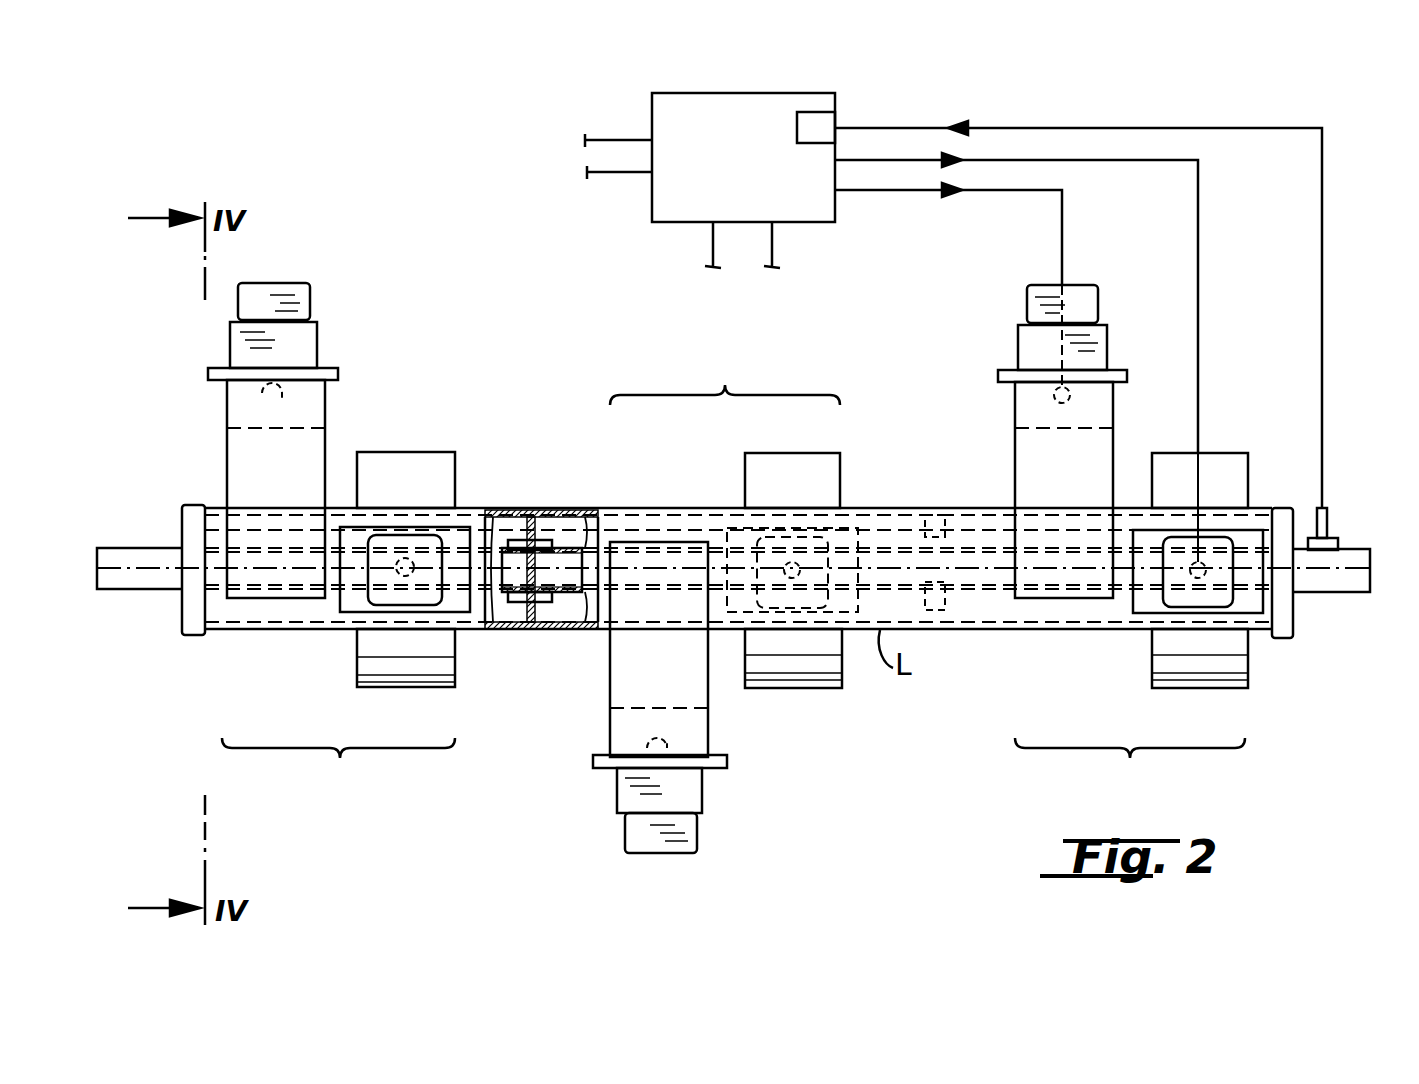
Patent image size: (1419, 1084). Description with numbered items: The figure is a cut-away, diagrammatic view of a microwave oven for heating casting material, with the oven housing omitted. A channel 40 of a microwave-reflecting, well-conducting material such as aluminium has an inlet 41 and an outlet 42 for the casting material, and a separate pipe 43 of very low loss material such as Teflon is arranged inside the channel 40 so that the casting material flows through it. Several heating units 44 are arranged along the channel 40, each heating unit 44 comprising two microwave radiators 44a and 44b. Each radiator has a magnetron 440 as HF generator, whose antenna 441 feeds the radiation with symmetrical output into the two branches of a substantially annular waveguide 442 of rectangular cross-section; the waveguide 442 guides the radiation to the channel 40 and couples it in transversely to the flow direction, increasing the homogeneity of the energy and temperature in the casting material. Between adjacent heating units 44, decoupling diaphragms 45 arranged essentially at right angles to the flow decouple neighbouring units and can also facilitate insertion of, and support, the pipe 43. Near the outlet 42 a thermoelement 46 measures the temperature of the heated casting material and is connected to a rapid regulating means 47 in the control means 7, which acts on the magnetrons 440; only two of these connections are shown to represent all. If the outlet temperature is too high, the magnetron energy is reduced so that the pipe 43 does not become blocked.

The control means 7 is at (663, 110).
The rapid regulating means 47 is at (818, 125).
The channel 40 is at (662, 502).
The inlet 41 is at (97, 548).
The outlet 42 is at (1372, 566).
The pipe 43 is at (583, 548).
The decoupling diaphragm 45 is at (530, 517).
The thermoelement 46 is at (1330, 540).
The heating unit 44 is at (733, 574).
The microwave radiator 44a is at (330, 343).
The microwave radiator 44b is at (440, 445).
The magnetron 440 is at (258, 300).
The antenna 441 is at (262, 393).
The waveguide 442 is at (238, 452).